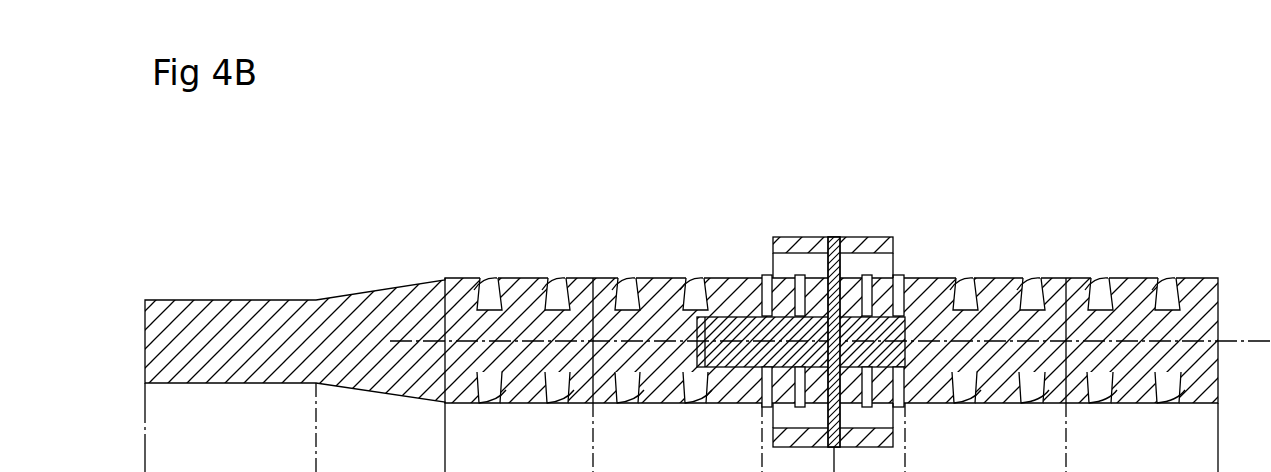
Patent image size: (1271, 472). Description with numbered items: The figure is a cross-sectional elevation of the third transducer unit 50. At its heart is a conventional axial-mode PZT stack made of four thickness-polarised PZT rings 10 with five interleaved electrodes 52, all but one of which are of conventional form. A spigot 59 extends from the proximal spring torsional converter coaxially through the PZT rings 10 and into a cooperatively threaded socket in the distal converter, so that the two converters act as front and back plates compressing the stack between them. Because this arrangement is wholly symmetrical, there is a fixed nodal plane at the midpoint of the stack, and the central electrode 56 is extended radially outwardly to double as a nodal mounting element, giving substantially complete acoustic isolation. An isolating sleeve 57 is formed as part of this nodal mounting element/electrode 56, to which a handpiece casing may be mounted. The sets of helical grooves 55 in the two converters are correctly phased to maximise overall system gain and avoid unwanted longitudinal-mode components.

The third transducer unit 50 is at (1035, 125).
The thickness-polarised PZT rings 10 is at (885, 237).
The interleaved electrodes 52 is at (765, 277).
The helical grooves 55 is at (553, 287).
The central electrode 56 is at (830, 237).
The isolating sleeve 57 is at (893, 237).
The spigot 59 is at (733, 325).